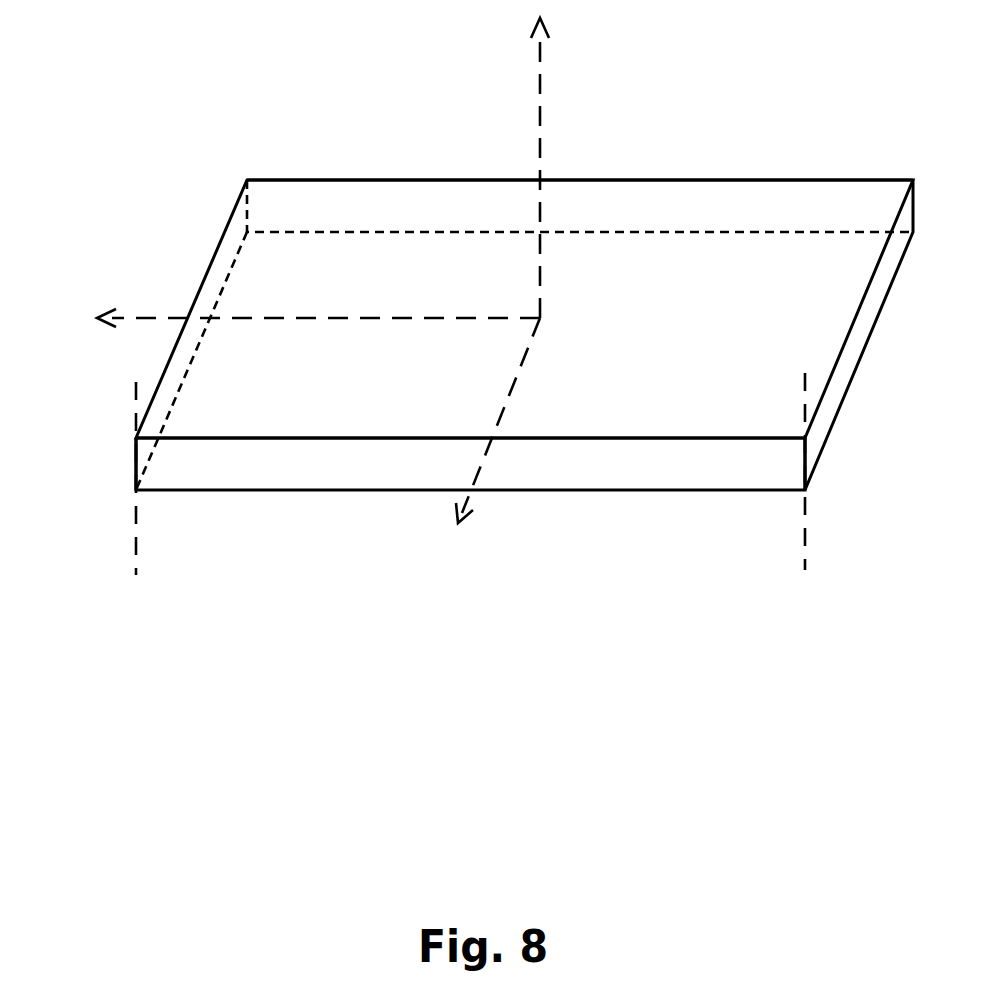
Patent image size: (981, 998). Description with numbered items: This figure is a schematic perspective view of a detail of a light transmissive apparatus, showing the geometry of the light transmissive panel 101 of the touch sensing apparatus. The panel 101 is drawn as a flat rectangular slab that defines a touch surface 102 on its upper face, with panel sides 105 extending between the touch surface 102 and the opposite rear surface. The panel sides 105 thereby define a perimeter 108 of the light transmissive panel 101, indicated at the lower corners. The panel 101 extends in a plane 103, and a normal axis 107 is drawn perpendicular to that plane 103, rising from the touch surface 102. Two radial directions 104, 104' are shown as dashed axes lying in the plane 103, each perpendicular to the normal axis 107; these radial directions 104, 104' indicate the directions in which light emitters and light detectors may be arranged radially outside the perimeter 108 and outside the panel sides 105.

The light transmissive panel 101 is at (303, 88).
The touch surface 102 is at (720, 305).
The plane 103 is at (795, 212).
The radial direction 104 is at (318, 296).
The radial direction 104' is at (545, 420).
The panel sides 105 is at (565, 205).
The normal axis 107 is at (540, 68).
The perimeter 108 is at (136, 530).